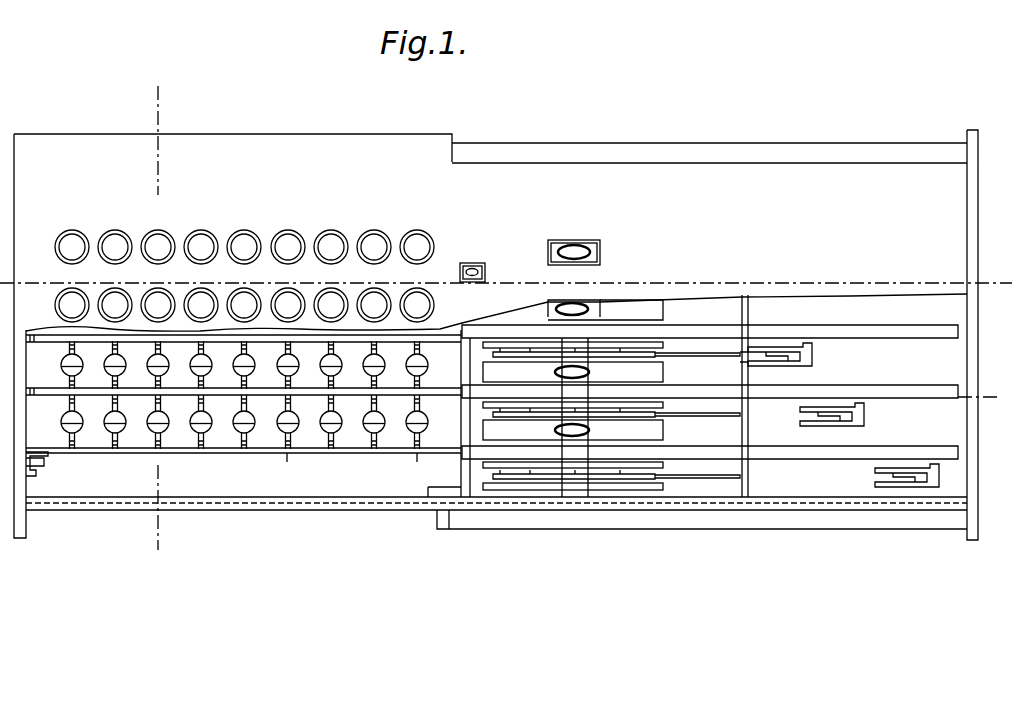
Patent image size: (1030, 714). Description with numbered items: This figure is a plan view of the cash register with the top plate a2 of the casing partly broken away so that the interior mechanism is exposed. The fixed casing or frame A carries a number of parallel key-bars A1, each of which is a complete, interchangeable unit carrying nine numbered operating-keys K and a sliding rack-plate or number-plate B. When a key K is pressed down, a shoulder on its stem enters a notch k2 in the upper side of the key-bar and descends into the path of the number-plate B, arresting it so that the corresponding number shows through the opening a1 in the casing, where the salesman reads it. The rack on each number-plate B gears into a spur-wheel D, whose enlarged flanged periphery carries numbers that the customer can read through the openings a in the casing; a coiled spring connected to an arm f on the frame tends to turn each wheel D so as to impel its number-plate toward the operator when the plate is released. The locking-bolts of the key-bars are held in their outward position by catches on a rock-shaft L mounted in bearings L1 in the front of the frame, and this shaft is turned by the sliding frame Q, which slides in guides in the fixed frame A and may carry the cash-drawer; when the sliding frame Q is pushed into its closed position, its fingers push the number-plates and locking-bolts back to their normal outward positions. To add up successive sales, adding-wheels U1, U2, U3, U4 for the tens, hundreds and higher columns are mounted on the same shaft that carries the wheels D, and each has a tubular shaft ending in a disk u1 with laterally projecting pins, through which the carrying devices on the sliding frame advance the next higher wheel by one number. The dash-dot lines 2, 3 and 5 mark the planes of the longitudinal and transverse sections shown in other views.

The fixed casing or frame A is at (497, 335).
The key-bar A1 is at (243, 394).
The sliding frame Q is at (604, 535).
The top plate a2 is at (496, 262).
The opening for indicating-wheel a is at (582, 278).
The opening for number-plate a1 is at (472, 264).
The operating-key K is at (244, 268).
The notch in key-bar k2 is at (356, 464).
The rock-shaft L is at (35, 478).
The bearings L1 is at (46, 468).
The sliding rack-plate or number-plate B is at (710, 385).
The spur-wheel or indicating-wheel D is at (578, 370).
The adding-wheel U1 is at (582, 347).
The adding-wheel U2 is at (583, 407).
The adding-wheel U3 is at (583, 467).
The adding-wheel U4 is at (583, 490).
The disk u1 is at (609, 415).
The arm f is at (813, 415).
The section line 2 2 is at (1005, 383).
The section line 3 3 is at (1008, 302).
The section line 5 5 is at (175, 551).